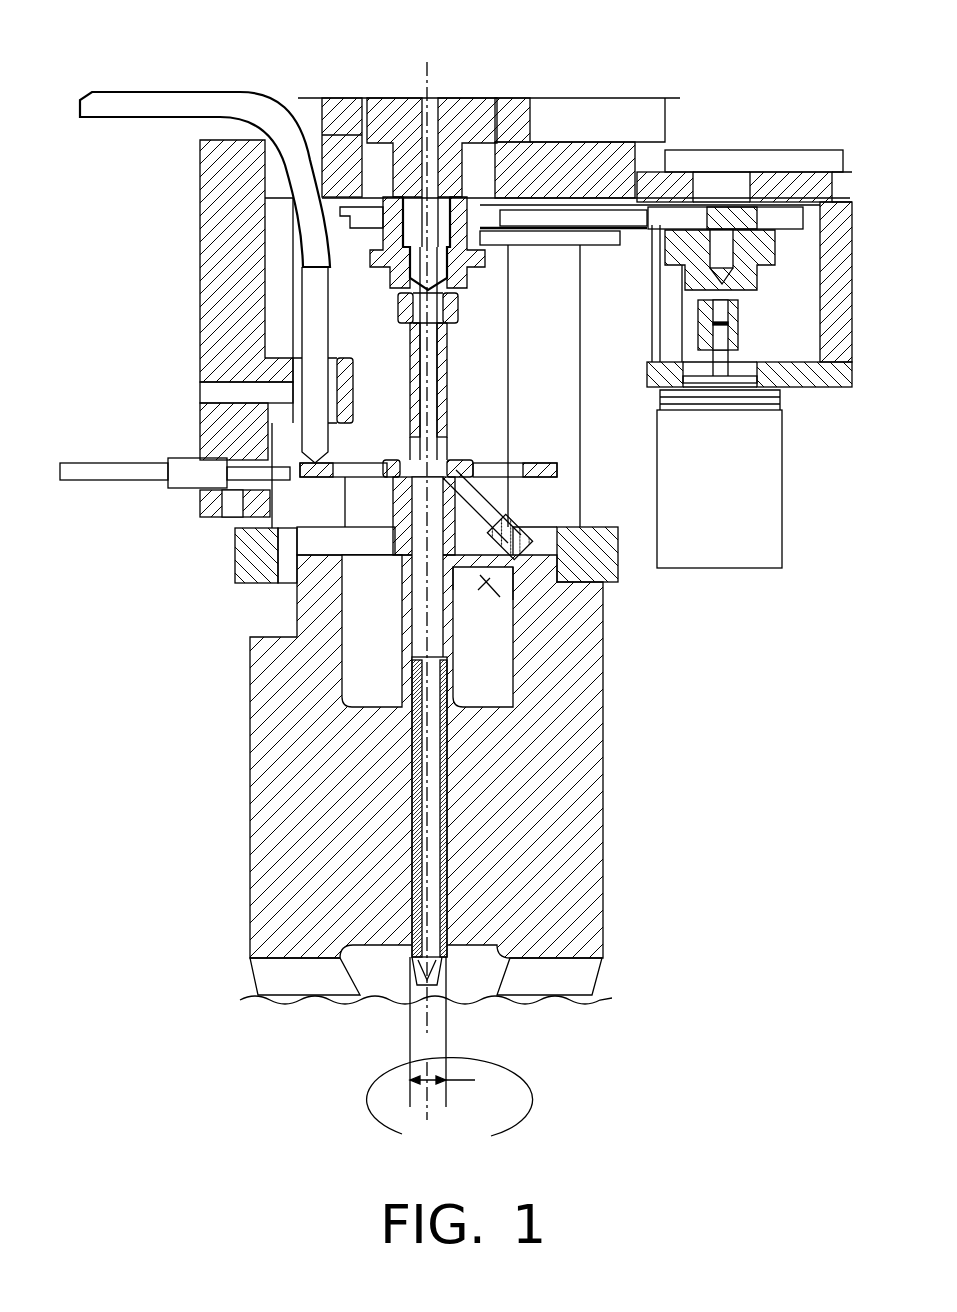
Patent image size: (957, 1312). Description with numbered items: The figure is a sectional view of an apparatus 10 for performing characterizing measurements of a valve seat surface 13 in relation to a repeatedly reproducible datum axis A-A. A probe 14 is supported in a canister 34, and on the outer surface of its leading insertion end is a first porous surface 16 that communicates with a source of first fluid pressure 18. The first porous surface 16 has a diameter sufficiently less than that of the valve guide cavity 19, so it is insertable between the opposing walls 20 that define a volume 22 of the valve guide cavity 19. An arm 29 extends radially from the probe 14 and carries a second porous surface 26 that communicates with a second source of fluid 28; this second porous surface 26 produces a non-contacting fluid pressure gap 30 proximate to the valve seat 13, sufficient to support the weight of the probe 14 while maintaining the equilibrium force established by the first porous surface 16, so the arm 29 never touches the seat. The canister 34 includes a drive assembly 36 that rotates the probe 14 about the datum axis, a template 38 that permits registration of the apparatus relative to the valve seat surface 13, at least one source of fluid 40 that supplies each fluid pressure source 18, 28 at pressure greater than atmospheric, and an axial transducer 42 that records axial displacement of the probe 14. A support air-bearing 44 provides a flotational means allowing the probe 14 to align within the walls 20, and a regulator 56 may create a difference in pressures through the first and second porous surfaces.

The apparatus 10 is at (257, 52).
The valve seat surface 13 is at (300, 548).
The probe 14 is at (400, 677).
The first porous surface 16 is at (410, 897).
The source of first fluid pressure 18 is at (430, 805).
The valve guide cavity 19 is at (460, 1081).
The opposing walls 20 is at (450, 1112).
The volume 22 is at (407, 1021).
The second porous surface 26 is at (518, 537).
The second source of fluid 28 is at (503, 565).
The arm 29 is at (455, 507).
The non-contacting fluid pressure gap 30 is at (482, 590).
The canister 34 is at (575, 165).
The drive assembly 36 is at (690, 185).
The template 38 is at (620, 583).
The source of fluid 40 is at (462, 100).
The axial transducer 42 is at (316, 305).
The support air-bearing 44 is at (393, 112).
The regulator 56 is at (443, 468).